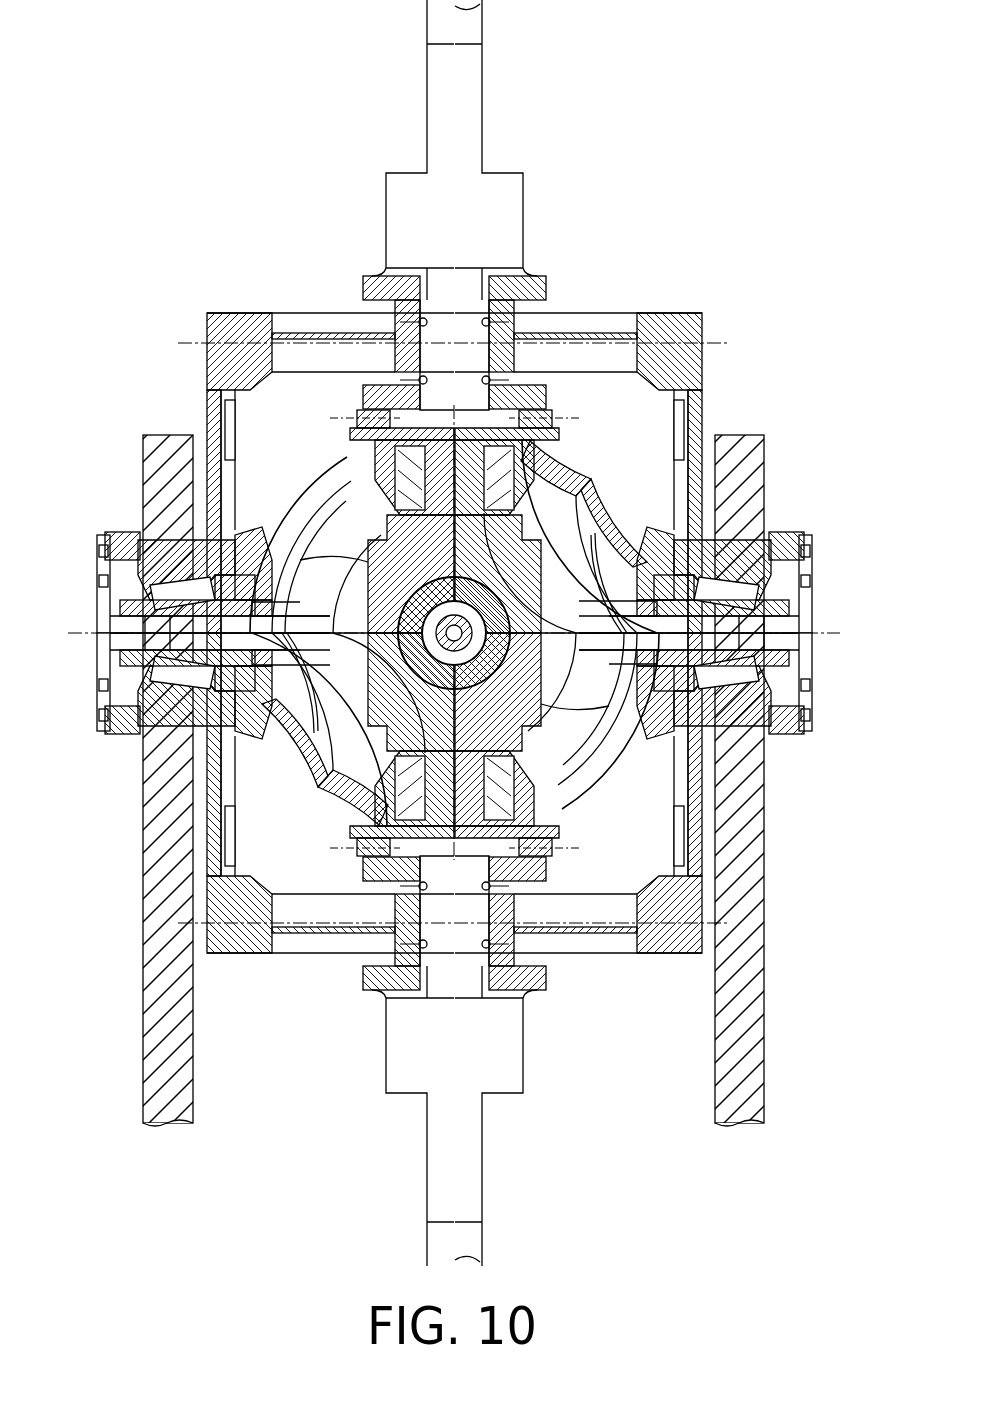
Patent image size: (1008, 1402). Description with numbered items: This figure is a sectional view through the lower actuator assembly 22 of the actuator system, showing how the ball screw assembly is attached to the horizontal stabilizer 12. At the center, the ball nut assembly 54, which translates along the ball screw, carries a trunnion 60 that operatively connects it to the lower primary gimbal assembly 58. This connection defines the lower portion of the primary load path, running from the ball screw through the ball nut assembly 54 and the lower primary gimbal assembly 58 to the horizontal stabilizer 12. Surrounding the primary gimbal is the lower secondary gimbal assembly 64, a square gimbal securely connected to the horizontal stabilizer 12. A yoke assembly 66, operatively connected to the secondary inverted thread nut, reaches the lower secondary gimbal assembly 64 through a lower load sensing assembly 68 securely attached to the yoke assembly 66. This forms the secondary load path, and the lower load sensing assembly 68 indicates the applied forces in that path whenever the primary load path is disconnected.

The horizontal stabilizer 12 is at (143, 938).
The lower actuator assembly 22 is at (618, 470).
The ball nut assembly 54 is at (403, 610).
The lower primary gimbal assembly 58 is at (612, 775).
The trunnion 60 is at (378, 680).
The lower secondary gimbal assembly 64 is at (665, 314).
The yoke assembly 66 is at (537, 276).
The lower load sensing assembly 68 is at (514, 160).